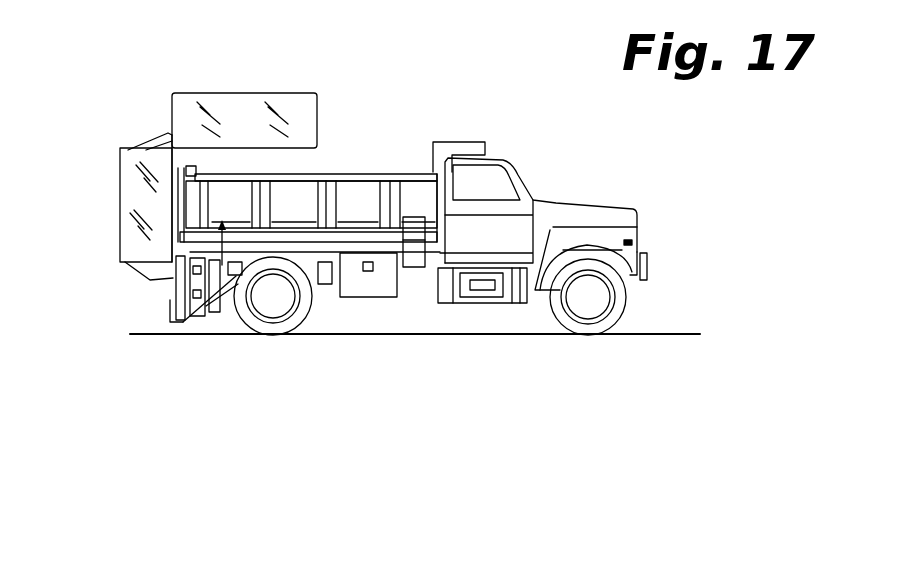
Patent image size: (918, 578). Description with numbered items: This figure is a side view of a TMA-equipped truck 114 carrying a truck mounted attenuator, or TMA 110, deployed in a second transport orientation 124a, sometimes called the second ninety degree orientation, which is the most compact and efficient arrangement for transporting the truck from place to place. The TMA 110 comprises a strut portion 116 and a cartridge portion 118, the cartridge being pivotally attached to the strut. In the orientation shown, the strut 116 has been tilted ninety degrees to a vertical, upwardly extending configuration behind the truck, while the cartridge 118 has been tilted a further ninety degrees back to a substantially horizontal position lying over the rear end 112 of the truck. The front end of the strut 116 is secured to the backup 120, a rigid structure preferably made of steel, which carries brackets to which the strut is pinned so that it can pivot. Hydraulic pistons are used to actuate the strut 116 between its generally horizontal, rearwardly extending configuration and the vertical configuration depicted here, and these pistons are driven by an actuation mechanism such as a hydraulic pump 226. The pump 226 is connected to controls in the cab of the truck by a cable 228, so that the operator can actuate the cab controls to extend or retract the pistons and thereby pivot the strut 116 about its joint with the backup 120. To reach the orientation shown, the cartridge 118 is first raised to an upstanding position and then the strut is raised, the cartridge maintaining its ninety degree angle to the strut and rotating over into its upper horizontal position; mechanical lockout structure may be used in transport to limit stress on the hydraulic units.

The truck mounted attenuator (TMA) 110 is at (327, 78).
The rear end of the truck 112 is at (227, 282).
The TMA-equipped truck 114 is at (620, 194).
The strut portion 116 is at (118, 200).
The cartridge portion 118 is at (281, 93).
The backup 120 is at (174, 330).
The second transport orientation 124a is at (148, 124).
The hydraulic pump 226 is at (262, 322).
The cable 228 is at (325, 283).